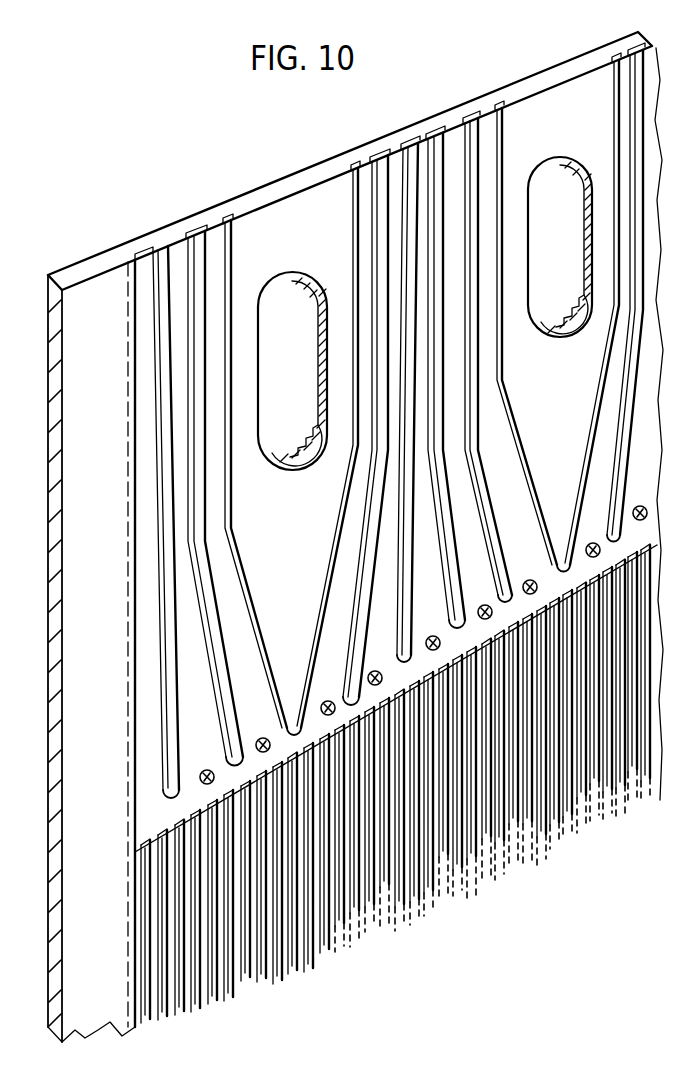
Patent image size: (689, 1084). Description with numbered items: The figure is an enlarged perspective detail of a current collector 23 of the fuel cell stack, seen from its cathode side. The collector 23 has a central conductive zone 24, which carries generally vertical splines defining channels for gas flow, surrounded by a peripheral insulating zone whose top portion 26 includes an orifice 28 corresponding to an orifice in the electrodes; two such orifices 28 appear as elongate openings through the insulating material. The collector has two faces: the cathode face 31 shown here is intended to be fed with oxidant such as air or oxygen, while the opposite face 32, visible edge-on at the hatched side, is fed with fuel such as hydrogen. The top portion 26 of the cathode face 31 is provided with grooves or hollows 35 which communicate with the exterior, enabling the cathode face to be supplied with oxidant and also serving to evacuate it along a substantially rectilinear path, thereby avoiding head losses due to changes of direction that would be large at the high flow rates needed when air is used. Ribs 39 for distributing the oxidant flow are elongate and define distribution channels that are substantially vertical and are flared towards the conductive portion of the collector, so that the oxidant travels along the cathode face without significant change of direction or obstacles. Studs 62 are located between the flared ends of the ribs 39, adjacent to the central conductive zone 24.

The current collector 23 is at (148, 220).
The central conductive zone 24 is at (250, 913).
The top portion of the insulating zone 26 is at (250, 528).
The orifice 28 is at (299, 304).
The cathode face 31 is at (112, 294).
The anode face 32 is at (90, 336).
The groove 35 is at (422, 128).
The rib 39 is at (210, 600).
The stud 62 is at (258, 744).